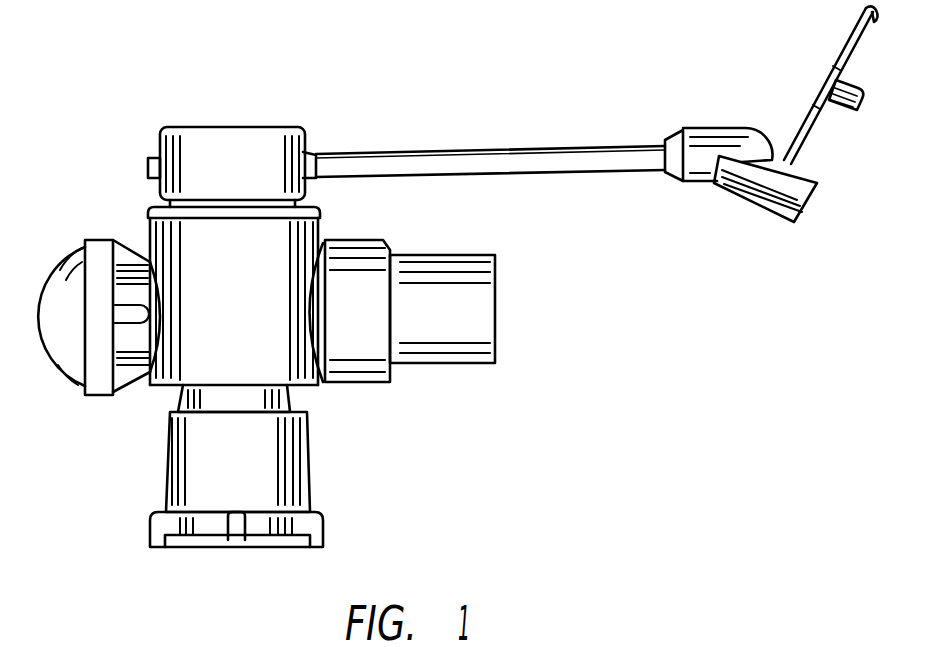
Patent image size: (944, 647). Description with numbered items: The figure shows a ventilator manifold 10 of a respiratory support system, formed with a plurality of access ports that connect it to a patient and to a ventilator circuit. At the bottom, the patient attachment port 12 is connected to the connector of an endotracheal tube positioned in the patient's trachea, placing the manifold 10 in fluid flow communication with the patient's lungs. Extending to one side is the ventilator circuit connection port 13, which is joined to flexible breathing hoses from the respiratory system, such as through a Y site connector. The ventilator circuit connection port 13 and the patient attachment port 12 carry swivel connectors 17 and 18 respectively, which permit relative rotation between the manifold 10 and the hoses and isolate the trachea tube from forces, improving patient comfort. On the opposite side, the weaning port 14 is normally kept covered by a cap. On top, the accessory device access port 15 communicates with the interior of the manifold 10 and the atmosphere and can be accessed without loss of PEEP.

The ventilator manifold 10 is at (357, 138).
The patient attachment port 12 is at (318, 460).
The ventilator circuit connection port 13 is at (449, 250).
The weaning port 14 is at (102, 400).
The accessory device access port 15 is at (153, 193).
The swivel connector 17 is at (452, 352).
The swivel connector 18 is at (320, 524).